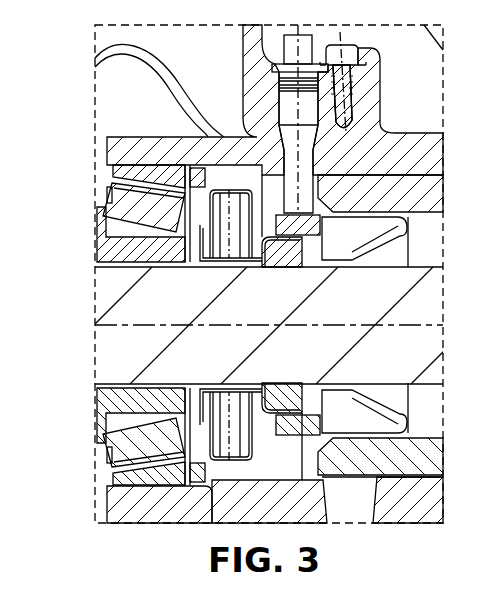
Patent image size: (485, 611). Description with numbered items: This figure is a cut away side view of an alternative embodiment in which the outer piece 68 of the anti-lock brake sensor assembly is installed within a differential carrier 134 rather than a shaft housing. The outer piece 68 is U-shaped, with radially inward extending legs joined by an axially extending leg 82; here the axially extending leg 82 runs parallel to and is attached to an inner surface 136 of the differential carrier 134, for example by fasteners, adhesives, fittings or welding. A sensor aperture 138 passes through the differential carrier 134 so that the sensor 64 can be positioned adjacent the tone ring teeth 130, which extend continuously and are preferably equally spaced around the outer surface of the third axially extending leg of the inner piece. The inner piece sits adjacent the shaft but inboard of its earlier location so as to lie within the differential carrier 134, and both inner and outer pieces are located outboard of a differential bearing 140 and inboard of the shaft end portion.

The sensor 64 is at (310, 187).
The outer piece 68 is at (228, 180).
The axially extending leg 82 is at (243, 185).
The teeth 130 is at (318, 228).
The differential carrier 134 is at (100, 152).
The inner surface 136 is at (232, 462).
The sensor aperture 138 is at (316, 126).
The differential bearing 140 is at (103, 222).